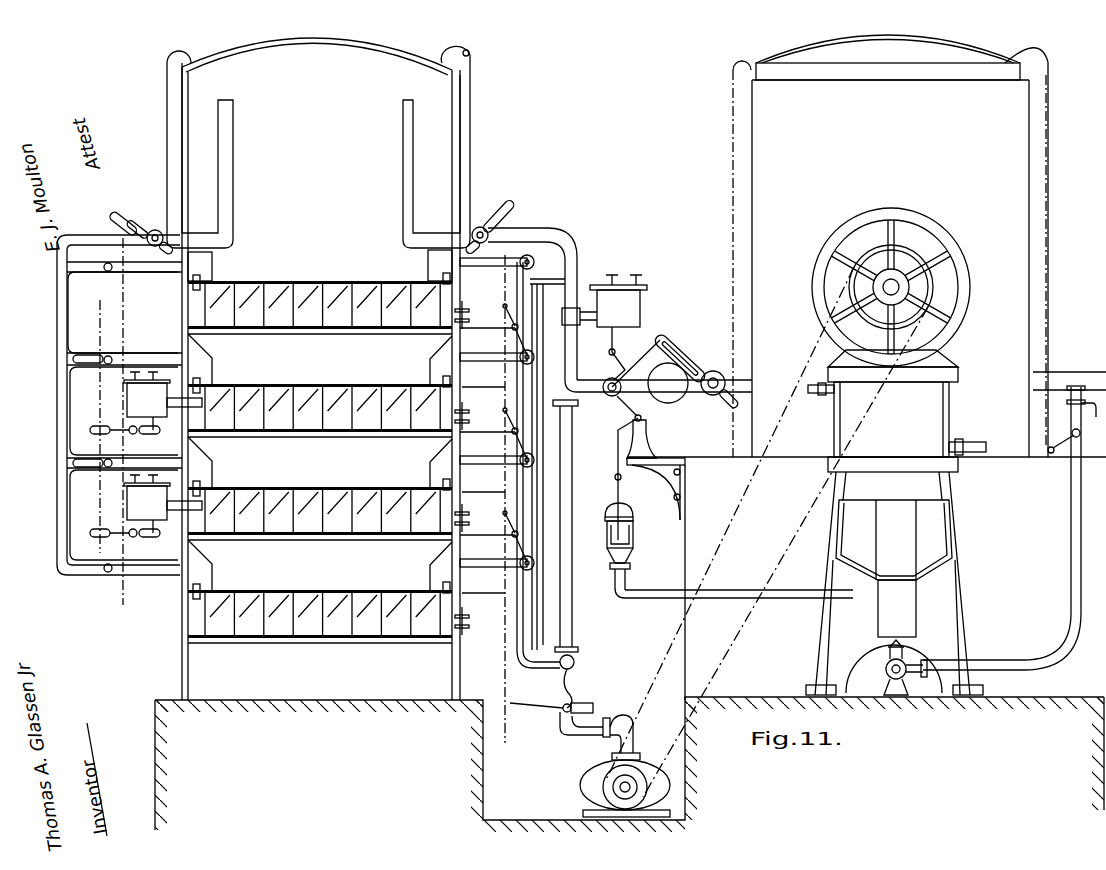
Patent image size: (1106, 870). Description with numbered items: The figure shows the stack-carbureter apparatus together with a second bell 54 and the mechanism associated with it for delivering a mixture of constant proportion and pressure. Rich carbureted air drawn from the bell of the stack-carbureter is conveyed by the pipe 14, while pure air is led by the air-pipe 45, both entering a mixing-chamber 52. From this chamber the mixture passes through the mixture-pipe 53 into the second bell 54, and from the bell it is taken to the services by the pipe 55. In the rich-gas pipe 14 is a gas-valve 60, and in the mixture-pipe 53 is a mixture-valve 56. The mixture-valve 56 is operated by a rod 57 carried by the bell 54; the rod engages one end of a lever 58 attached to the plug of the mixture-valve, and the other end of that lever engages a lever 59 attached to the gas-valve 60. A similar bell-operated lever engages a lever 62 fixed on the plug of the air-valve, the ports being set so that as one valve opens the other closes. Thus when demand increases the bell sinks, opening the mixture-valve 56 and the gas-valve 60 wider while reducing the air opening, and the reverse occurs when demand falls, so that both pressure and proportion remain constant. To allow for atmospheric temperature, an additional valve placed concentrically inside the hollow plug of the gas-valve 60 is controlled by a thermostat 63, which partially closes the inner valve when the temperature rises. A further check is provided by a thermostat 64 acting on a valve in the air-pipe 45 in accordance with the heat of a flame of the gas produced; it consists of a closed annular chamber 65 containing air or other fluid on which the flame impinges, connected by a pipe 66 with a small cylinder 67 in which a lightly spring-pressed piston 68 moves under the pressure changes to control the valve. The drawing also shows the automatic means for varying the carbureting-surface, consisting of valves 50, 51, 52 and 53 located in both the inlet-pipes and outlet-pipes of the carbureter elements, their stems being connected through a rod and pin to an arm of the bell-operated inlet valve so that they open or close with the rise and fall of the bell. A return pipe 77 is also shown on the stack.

The rich-gas pipe 14 is at (552, 236).
The air-pipe 45 is at (565, 461).
The outlet valve 50 is at (118, 547).
The valve 51 is at (72, 464).
The mixing-chamber 52 is at (72, 360).
The mixture-pipe 53 is at (66, 266).
The second bell 54 is at (890, 246).
The service pipe 55 is at (1088, 384).
The mixture-valve 56 is at (717, 396).
The rod 57 is at (729, 259).
The lever 58 is at (690, 359).
The lever 59 is at (636, 363).
The gas-valve 60 is at (645, 375).
The lever 62 is at (123, 216).
The thermostat 63 is at (644, 300).
The thermostat 64 is at (610, 521).
The closed annular chamber 65 is at (865, 598).
The pipe 66 is at (734, 600).
The small cylinder 67 is at (630, 560).
The spring-pressed piston 68 is at (632, 536).
The return pipe 77 is at (172, 233).